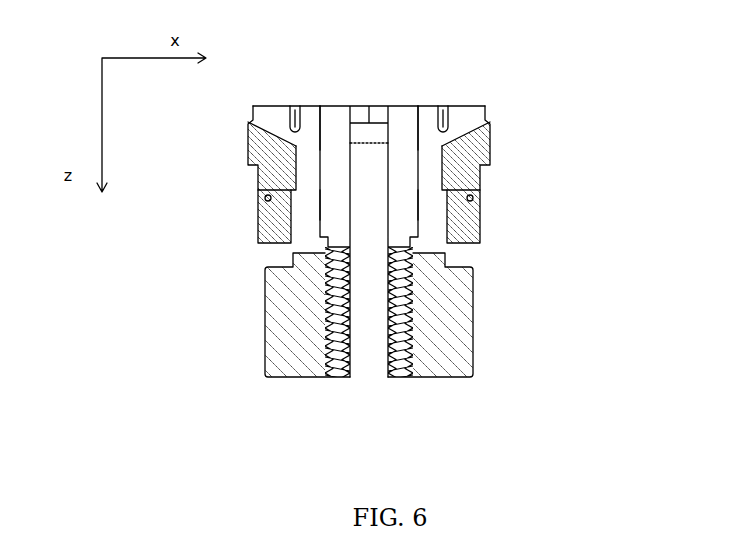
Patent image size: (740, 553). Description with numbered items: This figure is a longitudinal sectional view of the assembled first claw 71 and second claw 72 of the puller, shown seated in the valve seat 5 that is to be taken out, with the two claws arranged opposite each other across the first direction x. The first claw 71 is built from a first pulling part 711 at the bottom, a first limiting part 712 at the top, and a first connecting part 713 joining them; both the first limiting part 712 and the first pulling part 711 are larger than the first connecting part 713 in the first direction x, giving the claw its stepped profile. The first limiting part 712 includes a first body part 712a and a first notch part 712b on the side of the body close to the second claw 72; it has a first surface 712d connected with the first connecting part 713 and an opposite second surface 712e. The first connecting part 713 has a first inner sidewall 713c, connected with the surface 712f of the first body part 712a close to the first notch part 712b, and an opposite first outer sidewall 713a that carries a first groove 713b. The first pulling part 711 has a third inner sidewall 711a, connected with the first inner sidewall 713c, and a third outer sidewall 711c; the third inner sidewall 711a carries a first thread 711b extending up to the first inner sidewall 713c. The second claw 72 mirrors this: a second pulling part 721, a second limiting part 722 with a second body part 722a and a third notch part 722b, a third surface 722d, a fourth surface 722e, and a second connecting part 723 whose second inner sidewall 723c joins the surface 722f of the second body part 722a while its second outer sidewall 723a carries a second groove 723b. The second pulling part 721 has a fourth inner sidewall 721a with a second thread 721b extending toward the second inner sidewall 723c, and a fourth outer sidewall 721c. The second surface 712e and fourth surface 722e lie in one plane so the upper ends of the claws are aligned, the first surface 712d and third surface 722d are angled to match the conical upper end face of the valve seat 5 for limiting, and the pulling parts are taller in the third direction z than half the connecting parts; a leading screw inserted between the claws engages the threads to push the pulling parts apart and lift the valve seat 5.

The valve seat 5 is at (283, 217).
The first claw 71 is at (273, 348).
The first pulling part 711 is at (262, 315).
The third inner sidewall 711a is at (330, 348).
The first thread 711b is at (352, 340).
The third outer sidewall 711c is at (253, 317).
The first limiting part 712 is at (244, 102).
The first body part 712a is at (244, 102).
The first notch part 712b is at (337, 110).
The first surface 712d is at (272, 128).
The second surface 712e is at (283, 108).
The surface of the first body part 712f is at (320, 128).
The first connecting part 713 is at (257, 175).
The first outer sidewall 713a is at (257, 175).
The first groove 713b is at (295, 172).
The first inner sidewall 713c is at (320, 205).
The second claw 72 is at (471, 350).
The second pulling part 721 is at (476, 315).
The fourth inner sidewall 721a is at (422, 336).
The second thread 721b is at (392, 340).
The fourth outer sidewall 721c is at (480, 317).
The second limiting part 722 is at (520, 100).
The second body part 722a is at (520, 100).
The third notch part 722b is at (417, 107).
The third surface 722d is at (467, 130).
The fourth surface 722e is at (467, 107).
The surface of the second body part 722f is at (418, 143).
The second connecting part 723 is at (476, 175).
The second outer sidewall 723a is at (476, 175).
The second groove 723b is at (458, 176).
The second inner sidewall 723c is at (418, 205).